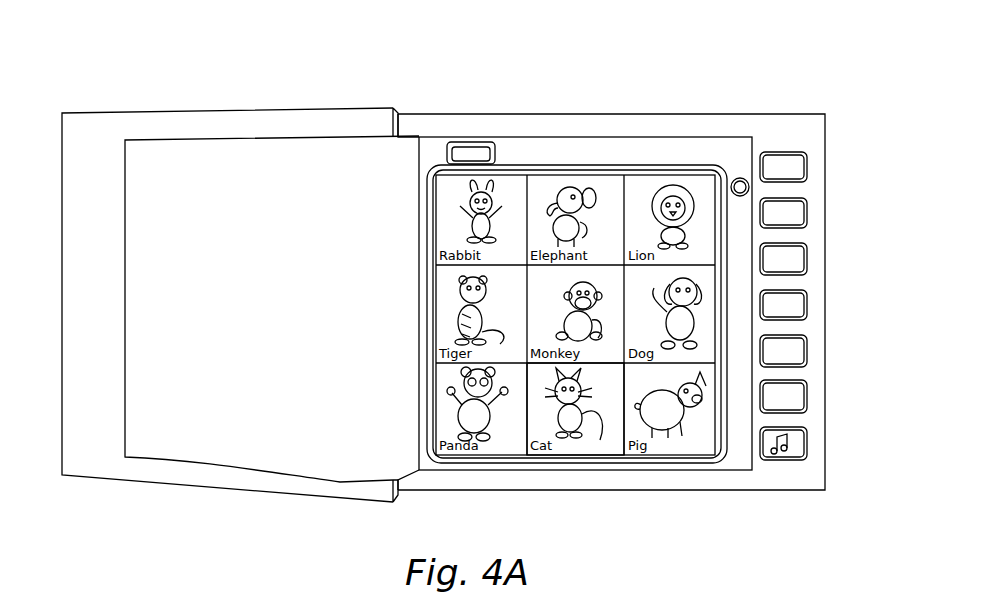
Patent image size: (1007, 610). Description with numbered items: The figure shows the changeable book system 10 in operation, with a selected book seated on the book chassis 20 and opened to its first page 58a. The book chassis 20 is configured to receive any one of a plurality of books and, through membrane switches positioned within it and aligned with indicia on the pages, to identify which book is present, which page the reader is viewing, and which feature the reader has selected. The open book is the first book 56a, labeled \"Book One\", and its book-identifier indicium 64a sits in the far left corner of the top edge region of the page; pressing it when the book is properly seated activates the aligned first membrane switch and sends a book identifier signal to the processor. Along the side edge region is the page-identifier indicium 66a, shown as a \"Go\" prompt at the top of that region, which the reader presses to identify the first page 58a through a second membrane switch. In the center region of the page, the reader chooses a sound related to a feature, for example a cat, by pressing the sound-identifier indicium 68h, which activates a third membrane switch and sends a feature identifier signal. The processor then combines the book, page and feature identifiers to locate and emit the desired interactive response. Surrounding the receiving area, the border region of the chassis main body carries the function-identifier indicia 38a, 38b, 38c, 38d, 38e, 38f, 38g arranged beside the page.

The changeable book system 10 is at (88, 95).
The book chassis 20 is at (93, 305).
The first book 56a is at (245, 162).
The first page 58a is at (440, 473).
The book-identifier indicium 64a is at (478, 143).
The page-identifier indicium 66a is at (739, 177).
The sound-identifier indicium 68h is at (603, 440).
The function-identifier indicium 38a is at (797, 171).
The function-identifier indicium 38b is at (805, 220).
The function-identifier indicium 38c is at (803, 253).
The function-identifier indicium 38d is at (803, 313).
The function-identifier indicium 38e is at (793, 352).
The function-identifier indicium 38f is at (802, 388).
The function-identifier indicium 38g is at (793, 442).